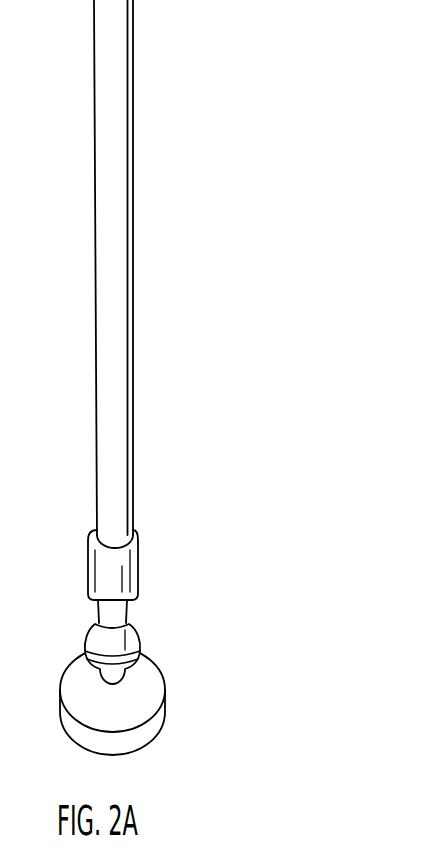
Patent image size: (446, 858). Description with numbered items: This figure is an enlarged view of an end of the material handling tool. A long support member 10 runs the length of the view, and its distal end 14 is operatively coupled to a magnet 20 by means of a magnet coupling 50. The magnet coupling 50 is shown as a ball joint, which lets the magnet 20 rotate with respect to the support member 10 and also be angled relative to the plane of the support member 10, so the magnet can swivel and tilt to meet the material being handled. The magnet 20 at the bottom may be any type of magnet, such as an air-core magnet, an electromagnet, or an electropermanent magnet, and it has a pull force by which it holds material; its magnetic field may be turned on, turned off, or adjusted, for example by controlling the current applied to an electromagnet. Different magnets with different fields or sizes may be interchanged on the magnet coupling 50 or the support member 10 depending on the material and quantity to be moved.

The support member 10 is at (158, 393).
The distal end 14 is at (158, 515).
The magnet coupling 50 is at (155, 645).
The magnet 20 is at (160, 688).